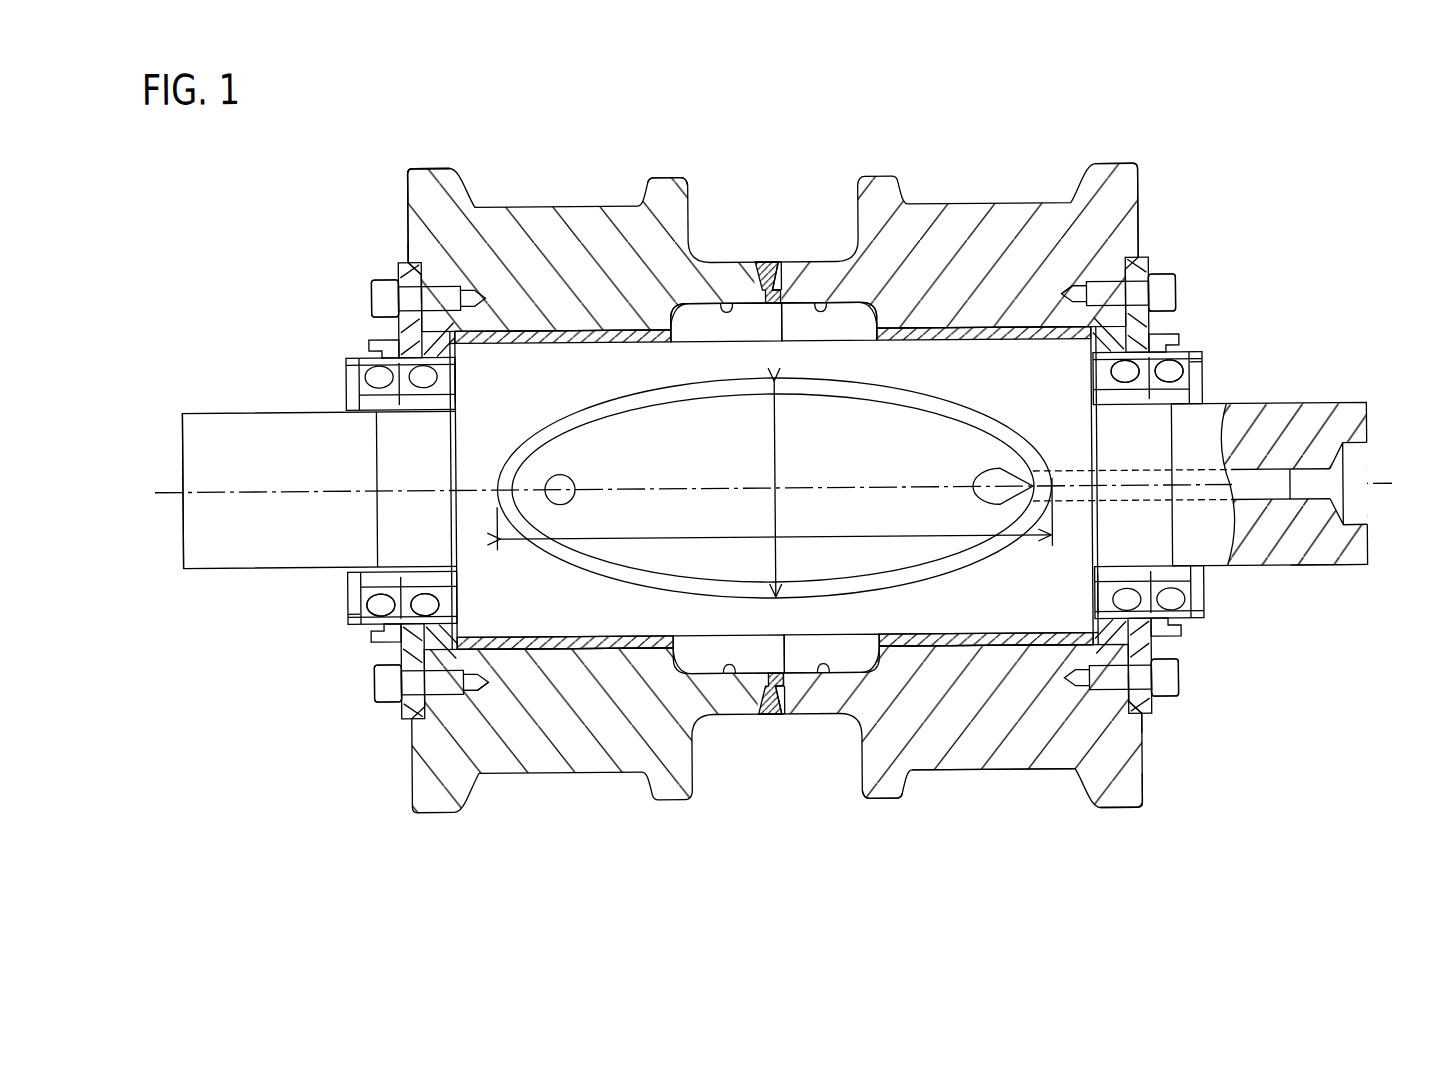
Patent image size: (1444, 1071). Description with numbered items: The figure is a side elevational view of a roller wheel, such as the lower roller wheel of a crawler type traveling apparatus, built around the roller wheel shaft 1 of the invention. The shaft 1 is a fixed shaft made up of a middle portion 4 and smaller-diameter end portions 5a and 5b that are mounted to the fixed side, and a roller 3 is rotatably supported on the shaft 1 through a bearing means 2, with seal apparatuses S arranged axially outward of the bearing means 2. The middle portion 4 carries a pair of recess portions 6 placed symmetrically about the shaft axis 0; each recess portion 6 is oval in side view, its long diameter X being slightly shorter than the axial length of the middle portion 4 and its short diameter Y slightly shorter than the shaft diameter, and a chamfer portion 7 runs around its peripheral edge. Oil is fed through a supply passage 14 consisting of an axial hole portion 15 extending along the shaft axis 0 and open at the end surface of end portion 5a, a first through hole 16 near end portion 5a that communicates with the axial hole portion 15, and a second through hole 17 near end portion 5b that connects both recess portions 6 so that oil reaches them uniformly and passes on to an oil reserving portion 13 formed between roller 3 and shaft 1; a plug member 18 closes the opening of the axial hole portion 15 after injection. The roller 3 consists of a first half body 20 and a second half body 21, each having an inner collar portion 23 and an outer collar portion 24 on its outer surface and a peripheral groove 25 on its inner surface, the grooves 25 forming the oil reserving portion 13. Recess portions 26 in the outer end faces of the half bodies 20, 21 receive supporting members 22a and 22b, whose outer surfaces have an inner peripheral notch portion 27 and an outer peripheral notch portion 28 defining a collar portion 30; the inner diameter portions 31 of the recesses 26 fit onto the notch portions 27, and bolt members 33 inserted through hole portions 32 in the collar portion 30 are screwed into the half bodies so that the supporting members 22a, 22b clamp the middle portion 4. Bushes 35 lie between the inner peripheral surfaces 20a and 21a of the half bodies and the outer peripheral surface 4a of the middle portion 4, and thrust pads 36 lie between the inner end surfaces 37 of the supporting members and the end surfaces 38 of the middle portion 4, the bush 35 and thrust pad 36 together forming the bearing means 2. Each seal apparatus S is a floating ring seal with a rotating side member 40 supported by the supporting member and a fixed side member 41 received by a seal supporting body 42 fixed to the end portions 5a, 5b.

The shaft axis 0 is at (1385, 488).
The roller wheel shaft 1 is at (225, 396).
The bearing means 2 is at (628, 652).
The roller 3 is at (983, 200).
The middle portion 4 is at (908, 626).
The outer peripheral surface of the middle portion 4a is at (780, 704).
The one end portion 5a is at (1300, 409).
The another end portion 5b is at (240, 564).
The recess portion 6 is at (700, 568).
The chamfer portion 7 is at (887, 400).
The oil reserving portion 13 is at (765, 702).
The supply passage 14 is at (1290, 546).
The axial hole portion 15 is at (1233, 498).
The first through hole 16 is at (975, 489).
The second through hole 17 is at (575, 492).
The plug member 18 is at (1367, 516).
The first half body 20 is at (1008, 773).
The inner peripheral surface of the first half body 20a is at (975, 632).
The second half body 21 is at (548, 203).
The inner peripheral surface of the second half body 21a is at (577, 345).
The supporting member 22a is at (1170, 342).
The supporting member 22b is at (385, 640).
The inner collar portion 23 is at (668, 178).
The outer collar portion 24 is at (430, 168).
The peripheral groove 25 is at (740, 303).
The recess portion 26 is at (408, 261).
The peripheral notch portion 27 is at (435, 272).
The peripheral notch portion 28 is at (385, 340).
The collar portion 30 is at (373, 296).
The inner diameter portion 31 is at (460, 345).
The hole portion 32 is at (1080, 294).
The bolt member 33 is at (1177, 290).
The bush 35 is at (975, 334).
The thrust pad 36 is at (457, 373).
The inner end surface 37 is at (1090, 343).
The end surface 38 is at (1093, 374).
The rotating side member 40 is at (1127, 386).
The fixed side member 41 is at (1172, 386).
The seal supporting body 42 is at (350, 375).
The seal apparatus S is at (1197, 372).
The long diameter X is at (775, 514).
The short diameter Y is at (762, 488).